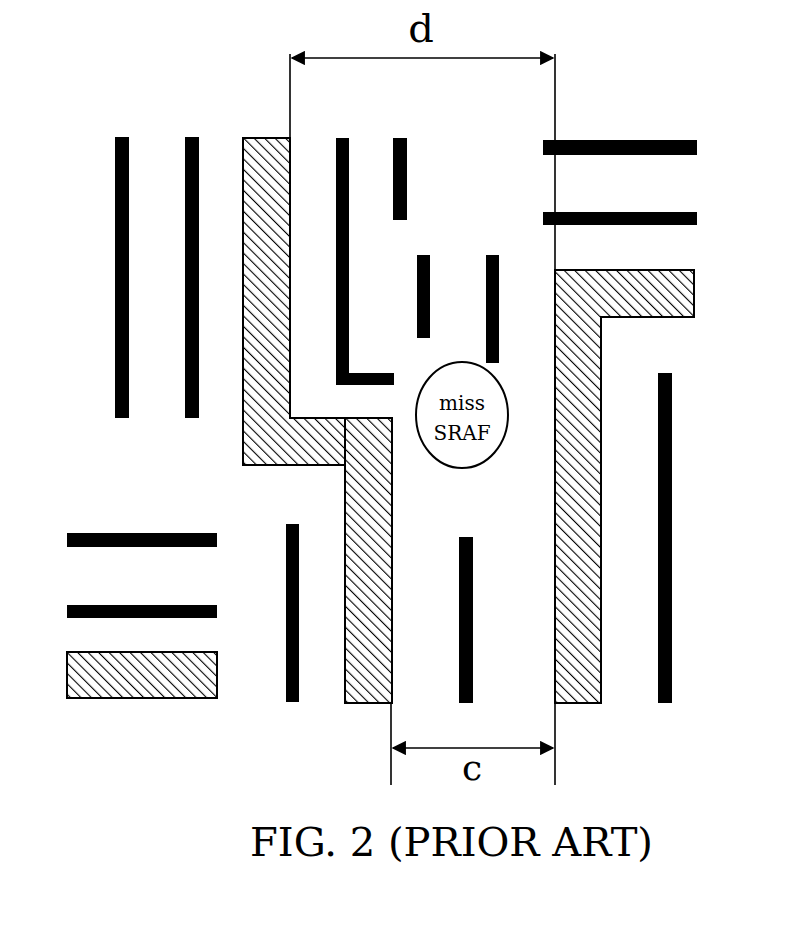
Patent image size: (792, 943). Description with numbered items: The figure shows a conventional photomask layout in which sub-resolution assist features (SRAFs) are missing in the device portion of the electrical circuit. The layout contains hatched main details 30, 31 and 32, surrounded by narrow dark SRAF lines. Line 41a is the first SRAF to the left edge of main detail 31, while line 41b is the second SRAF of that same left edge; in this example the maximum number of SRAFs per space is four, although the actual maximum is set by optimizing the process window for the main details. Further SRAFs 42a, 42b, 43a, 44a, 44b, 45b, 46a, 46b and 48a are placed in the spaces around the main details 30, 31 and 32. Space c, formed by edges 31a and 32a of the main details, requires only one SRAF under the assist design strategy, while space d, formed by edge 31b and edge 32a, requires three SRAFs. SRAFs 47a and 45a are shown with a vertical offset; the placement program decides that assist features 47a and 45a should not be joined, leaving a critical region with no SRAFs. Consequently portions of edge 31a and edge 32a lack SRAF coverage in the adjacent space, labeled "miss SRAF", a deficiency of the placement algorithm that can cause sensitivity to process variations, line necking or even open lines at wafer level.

The main pattern 30 is at (62, 700).
The main detail 31 is at (280, 138).
The edge of main detail 31a is at (392, 510).
The edge of main detail 31b is at (290, 350).
The main detail 32 is at (694, 295).
The edge of main detail 32a is at (555, 403).
The first SRAF 41a is at (192, 420).
The second SRAF 41b is at (122, 420).
The sub-resolution assist feature 42a is at (70, 620).
The sub-resolution assist feature 42b is at (80, 548).
The sub-resolution assist feature 43a is at (291, 704).
The sub-resolution assist feature 44a is at (343, 138).
The sub-resolution assist feature 44b is at (400, 138).
The assist feature 45a is at (493, 255).
The sub-resolution assist feature 45b is at (424, 255).
The sub-resolution assist feature 46a is at (697, 218).
The sub-resolution assist feature 46b is at (697, 148).
The assist feature 47a is at (466, 537).
The sub-resolution assist feature 48a is at (672, 385).